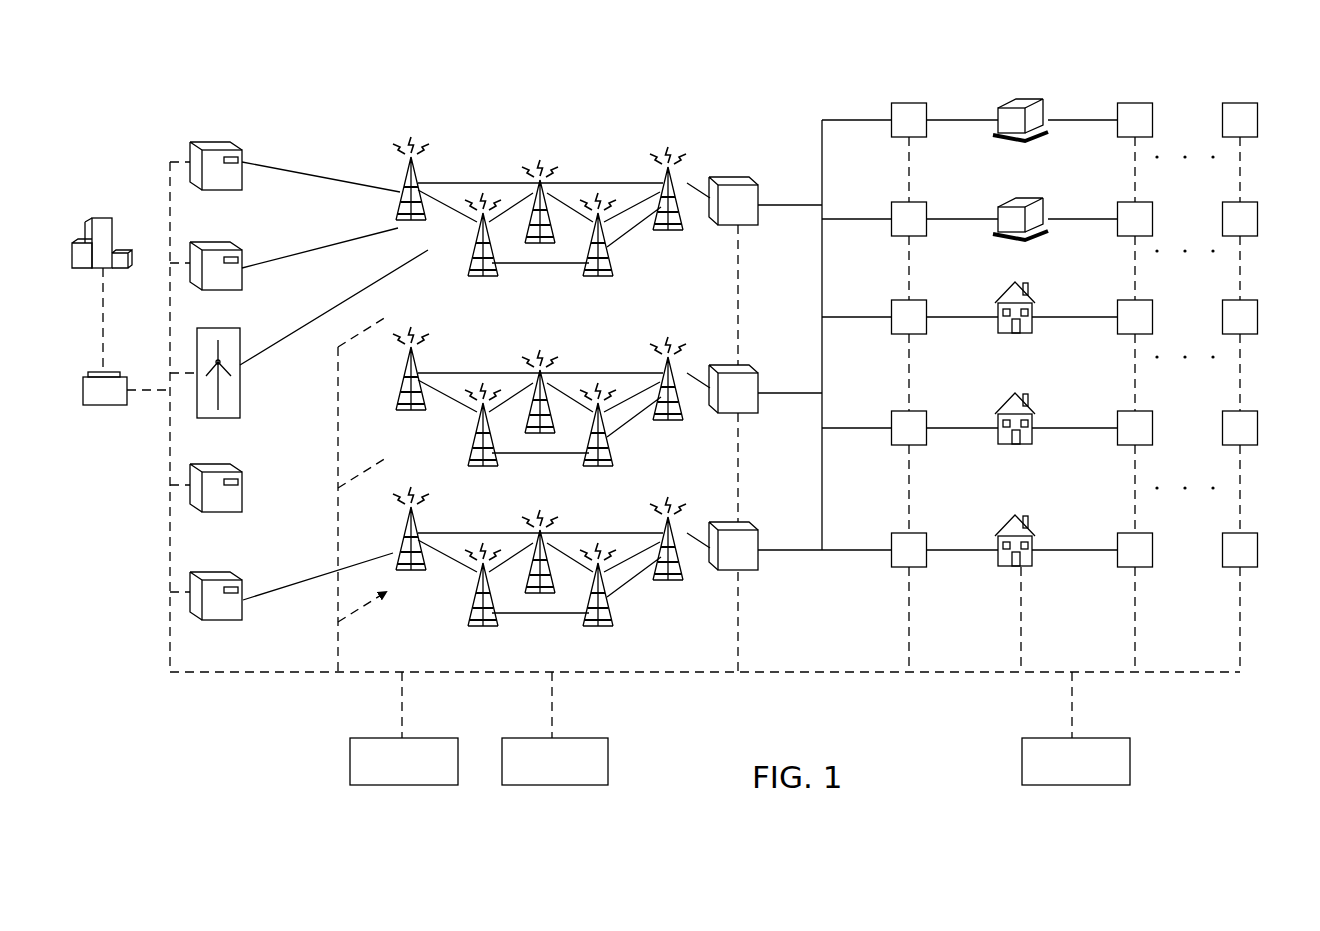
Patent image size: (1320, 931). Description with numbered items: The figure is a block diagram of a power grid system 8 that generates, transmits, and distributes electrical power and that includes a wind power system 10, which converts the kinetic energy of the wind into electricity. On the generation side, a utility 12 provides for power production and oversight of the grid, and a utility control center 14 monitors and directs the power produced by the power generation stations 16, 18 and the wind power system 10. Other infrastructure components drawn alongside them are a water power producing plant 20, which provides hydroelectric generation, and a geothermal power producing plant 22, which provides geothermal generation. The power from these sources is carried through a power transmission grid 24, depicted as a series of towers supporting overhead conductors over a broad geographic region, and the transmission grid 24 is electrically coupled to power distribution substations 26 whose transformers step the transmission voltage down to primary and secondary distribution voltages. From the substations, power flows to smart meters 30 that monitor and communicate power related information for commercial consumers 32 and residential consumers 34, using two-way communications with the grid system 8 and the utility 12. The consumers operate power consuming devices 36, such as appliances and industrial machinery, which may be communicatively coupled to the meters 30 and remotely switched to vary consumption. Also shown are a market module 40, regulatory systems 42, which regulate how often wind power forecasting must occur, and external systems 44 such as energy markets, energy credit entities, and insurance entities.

The power grid system 8 is at (141, 101).
The wind power system 10 is at (230, 328).
The utility 12 is at (103, 217).
The utility control center 14 is at (105, 405).
The power generation station 16 is at (222, 242).
The power generation station 18 is at (222, 142).
The water power producing plant 20 is at (222, 464).
The geothermal power producing plant 22 is at (222, 572).
The power transmission grid 24 is at (487, 140).
The power distribution substation 26 is at (735, 185).
The smart meter 30 is at (906, 103).
The commercial consumer 32 is at (1030, 97).
The residential consumer 34 is at (1010, 284).
The power consuming device 36 is at (1137, 103).
The market module MKT 40 is at (350, 761).
The regulatory system 42 is at (608, 761).
The external system 44 is at (1130, 761).